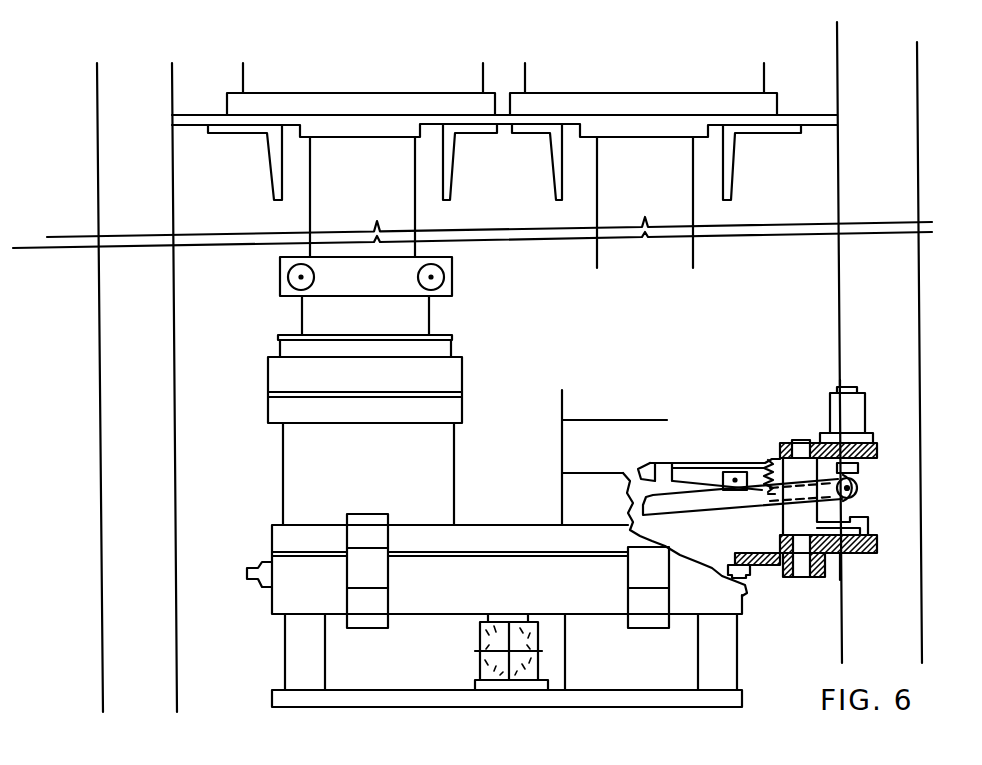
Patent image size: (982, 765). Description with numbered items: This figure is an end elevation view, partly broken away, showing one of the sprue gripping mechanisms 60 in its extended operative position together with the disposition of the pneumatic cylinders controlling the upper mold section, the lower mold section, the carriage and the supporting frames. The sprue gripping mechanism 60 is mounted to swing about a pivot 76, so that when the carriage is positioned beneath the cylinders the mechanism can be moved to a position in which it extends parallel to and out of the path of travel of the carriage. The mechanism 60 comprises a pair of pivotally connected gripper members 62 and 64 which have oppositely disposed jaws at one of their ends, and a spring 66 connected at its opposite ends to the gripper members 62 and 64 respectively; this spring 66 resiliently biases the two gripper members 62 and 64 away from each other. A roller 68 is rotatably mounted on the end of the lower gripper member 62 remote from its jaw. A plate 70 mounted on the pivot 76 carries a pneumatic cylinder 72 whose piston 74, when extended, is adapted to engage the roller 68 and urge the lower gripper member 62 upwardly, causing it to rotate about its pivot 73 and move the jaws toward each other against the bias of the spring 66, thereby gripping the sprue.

The sprue gripping mechanism 60 is at (746, 462).
The lower gripper member 62 is at (703, 505).
The gripper member 64 is at (666, 465).
The spring 66 is at (770, 459).
The roller 68 is at (858, 492).
The plate 70 is at (877, 450).
The pneumatic cylinder 72 is at (862, 410).
The pivot 73 is at (733, 476).
The piston 74 is at (858, 468).
The pivot 76 is at (803, 600).